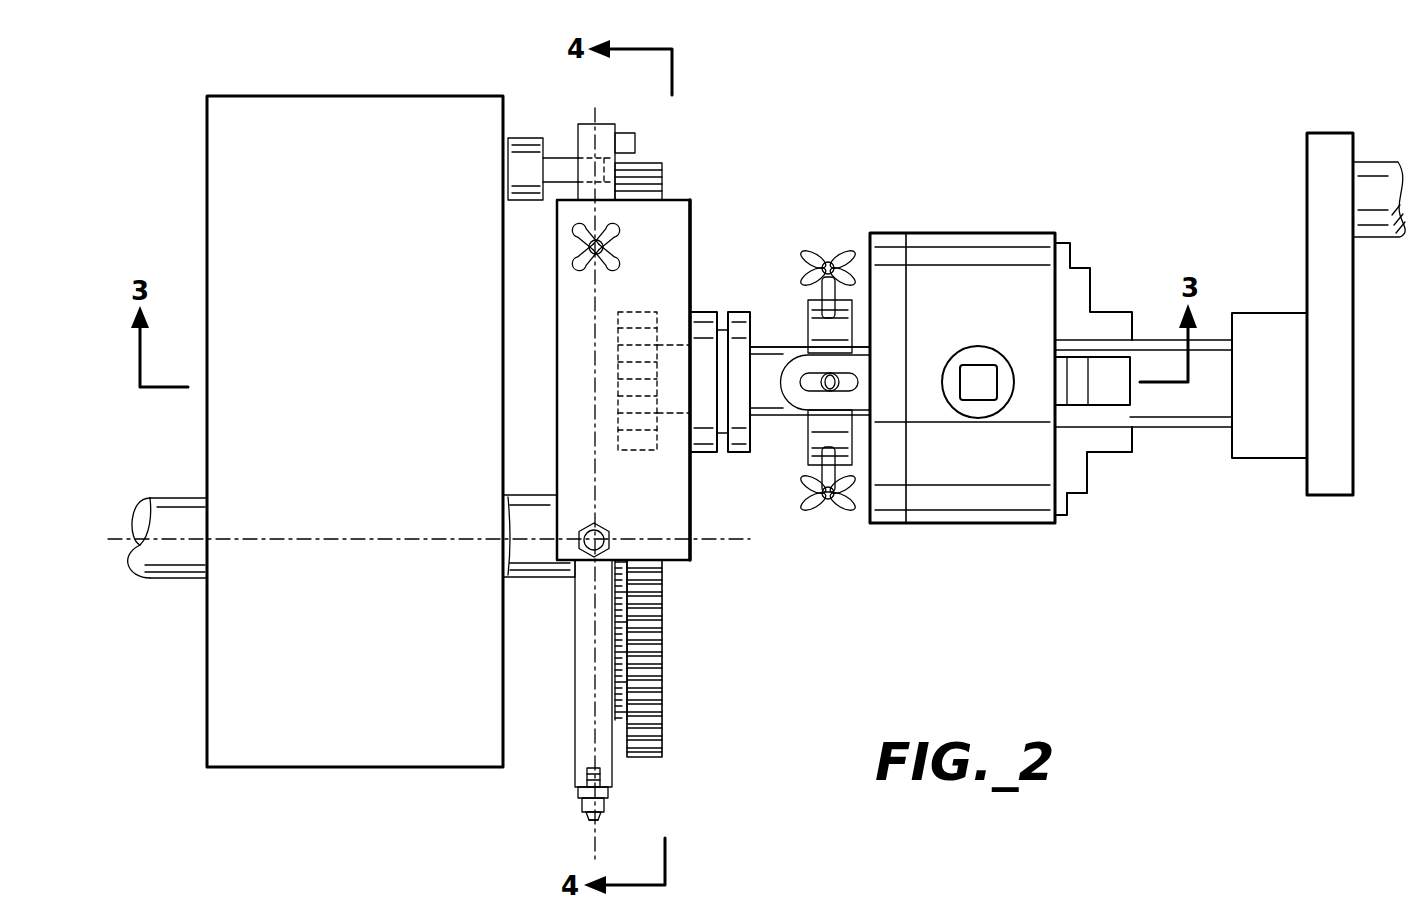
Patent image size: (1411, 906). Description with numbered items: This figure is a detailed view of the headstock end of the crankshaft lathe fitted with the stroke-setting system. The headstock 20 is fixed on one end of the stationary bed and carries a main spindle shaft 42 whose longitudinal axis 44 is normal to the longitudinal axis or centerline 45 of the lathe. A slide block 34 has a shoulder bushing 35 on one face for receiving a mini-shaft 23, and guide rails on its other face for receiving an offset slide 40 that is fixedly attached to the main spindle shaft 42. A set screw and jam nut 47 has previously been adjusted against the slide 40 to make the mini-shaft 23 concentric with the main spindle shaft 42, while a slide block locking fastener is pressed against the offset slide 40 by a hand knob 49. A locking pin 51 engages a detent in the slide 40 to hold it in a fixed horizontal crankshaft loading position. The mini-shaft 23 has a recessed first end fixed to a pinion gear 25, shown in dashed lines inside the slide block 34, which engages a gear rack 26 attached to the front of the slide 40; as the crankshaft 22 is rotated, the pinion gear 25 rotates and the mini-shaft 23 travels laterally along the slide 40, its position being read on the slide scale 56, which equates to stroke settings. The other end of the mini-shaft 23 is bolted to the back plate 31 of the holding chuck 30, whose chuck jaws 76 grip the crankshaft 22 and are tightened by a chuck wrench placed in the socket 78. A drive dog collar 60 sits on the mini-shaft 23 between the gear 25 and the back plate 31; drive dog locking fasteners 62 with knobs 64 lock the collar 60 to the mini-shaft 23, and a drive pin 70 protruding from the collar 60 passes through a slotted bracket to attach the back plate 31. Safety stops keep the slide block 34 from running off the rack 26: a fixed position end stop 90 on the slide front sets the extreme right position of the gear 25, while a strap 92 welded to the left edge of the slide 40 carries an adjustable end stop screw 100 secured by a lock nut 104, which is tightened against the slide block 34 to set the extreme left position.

The headstock 20 is at (350, 115).
The crankshaft 22 is at (1318, 200).
The mini-shaft 23 is at (770, 420).
The pinion gear 25 is at (655, 315).
The gear rack 26 is at (650, 685).
The holding chuck 30 is at (1010, 233).
The back plate 31 is at (893, 235).
The slide block 34 is at (692, 240).
The shoulder bushing 35 is at (750, 310).
The offset slide 40 is at (617, 762).
The main spindle shaft 42 is at (513, 590).
The longitudinal axis 44 is at (350, 540).
The longitudinal axis or centerline 45 is at (590, 826).
The set screw and jam nut 47 is at (610, 530).
The hand knob 49 is at (610, 262).
The locking pin 51 is at (562, 140).
The slide scale 56 is at (640, 628).
The drive dog collar 60 is at (810, 440).
The drive dog locking fastener 62 is at (822, 473).
The knob 64 is at (808, 245).
The drive pin 70 is at (853, 380).
The chuck jaw 76 is at (1090, 480).
The socket 78 is at (976, 390).
The fixed position end stop 90 is at (640, 145).
The strap 92 is at (612, 790).
The adjustable end stop screw 100 is at (588, 812).
The lock nut 104 is at (608, 805).